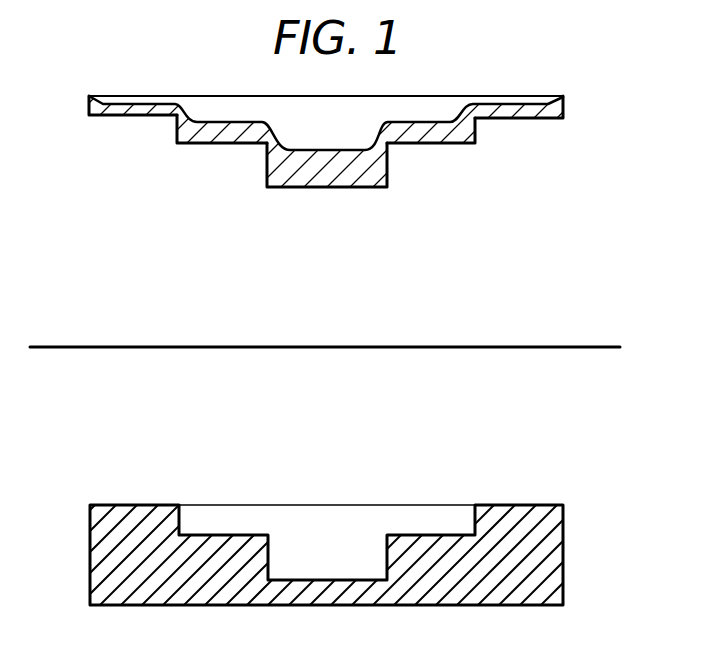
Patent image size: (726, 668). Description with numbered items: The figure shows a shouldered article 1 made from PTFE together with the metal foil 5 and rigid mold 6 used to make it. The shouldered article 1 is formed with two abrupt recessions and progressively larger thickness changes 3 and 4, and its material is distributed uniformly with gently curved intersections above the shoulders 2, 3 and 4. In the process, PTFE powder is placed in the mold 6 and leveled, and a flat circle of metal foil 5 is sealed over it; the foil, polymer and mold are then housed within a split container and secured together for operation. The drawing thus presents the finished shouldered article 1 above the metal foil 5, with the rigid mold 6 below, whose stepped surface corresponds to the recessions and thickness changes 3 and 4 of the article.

The shouldered article 1 is at (443, 93).
The shoulder 2 is at (572, 103).
The thickness change 3 is at (480, 128).
The thickness change 4 is at (392, 162).
The metal foil 5 is at (458, 342).
The rigid mold 6 is at (568, 560).